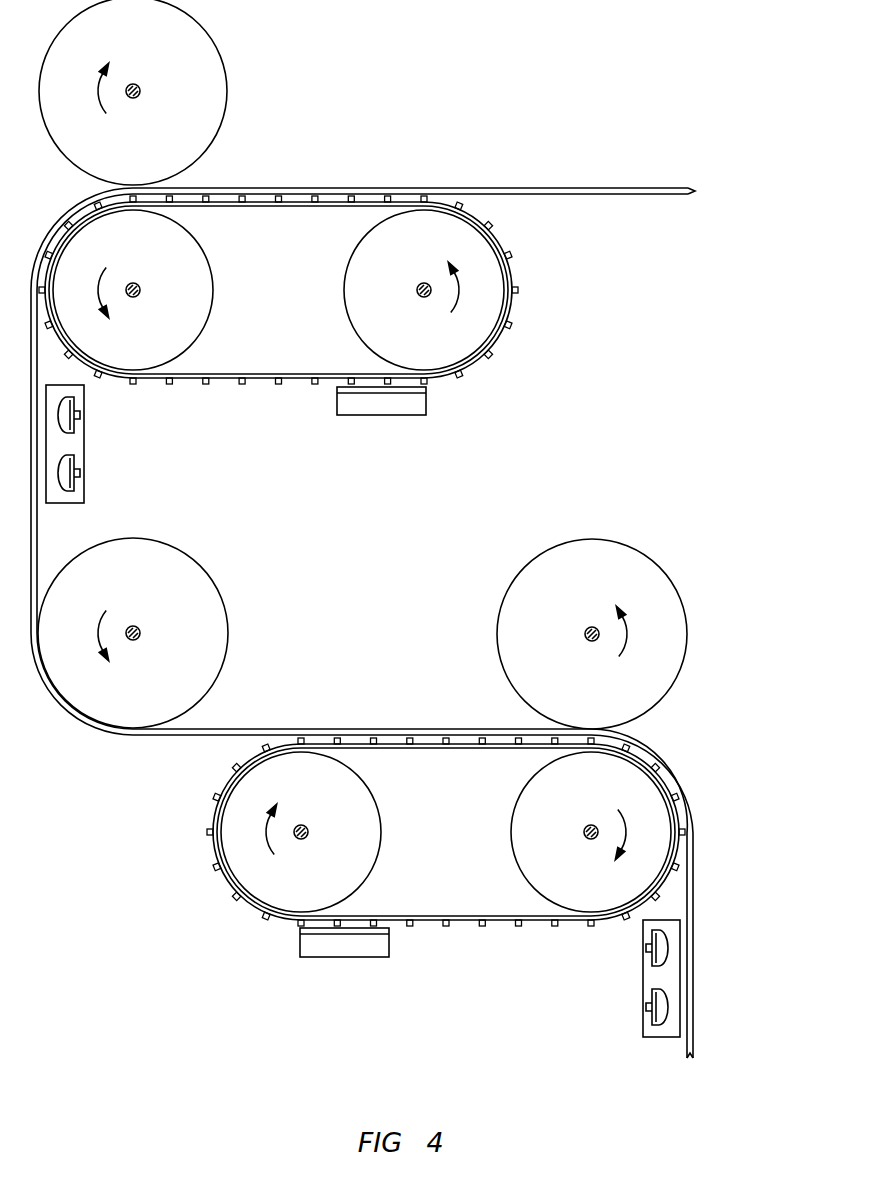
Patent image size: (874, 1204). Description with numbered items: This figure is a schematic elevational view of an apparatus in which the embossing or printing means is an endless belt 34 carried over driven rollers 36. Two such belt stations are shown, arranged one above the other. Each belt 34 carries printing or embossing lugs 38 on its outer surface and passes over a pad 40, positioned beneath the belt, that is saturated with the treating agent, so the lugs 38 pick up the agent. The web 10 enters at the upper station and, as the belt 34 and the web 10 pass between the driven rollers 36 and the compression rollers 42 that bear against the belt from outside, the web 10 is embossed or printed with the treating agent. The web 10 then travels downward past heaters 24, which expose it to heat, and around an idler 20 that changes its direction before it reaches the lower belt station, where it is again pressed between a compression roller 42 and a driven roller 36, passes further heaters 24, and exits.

The web 10 is at (582, 187).
The idler 20 is at (229, 636).
The heaters 24 is at (85, 442).
The endless belt 34 is at (249, 376).
The driven rollers 36 is at (212, 262).
The printing or embossing lugs 38 is at (517, 290).
The pad 40 is at (389, 415).
The compression rollers 42 is at (229, 91).